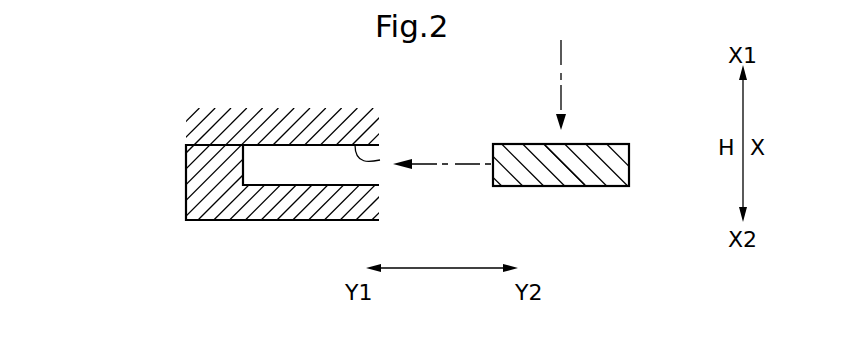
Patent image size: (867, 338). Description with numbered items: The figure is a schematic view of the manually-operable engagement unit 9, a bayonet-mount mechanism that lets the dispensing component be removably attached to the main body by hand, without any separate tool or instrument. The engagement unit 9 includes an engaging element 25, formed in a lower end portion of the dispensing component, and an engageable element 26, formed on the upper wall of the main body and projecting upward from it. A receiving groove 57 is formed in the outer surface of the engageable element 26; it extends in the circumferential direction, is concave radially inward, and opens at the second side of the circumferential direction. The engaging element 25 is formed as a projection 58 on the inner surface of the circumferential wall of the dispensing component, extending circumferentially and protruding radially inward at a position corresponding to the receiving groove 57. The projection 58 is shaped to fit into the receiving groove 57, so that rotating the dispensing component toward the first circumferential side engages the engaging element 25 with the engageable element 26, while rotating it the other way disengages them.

The manually-operable engagement unit 9 is at (358, 144).
The engageable element 26 is at (208, 170).
The engaging element 25 is at (598, 153).
The receiving groove 57 is at (379, 160).
The projection 58 is at (566, 173).